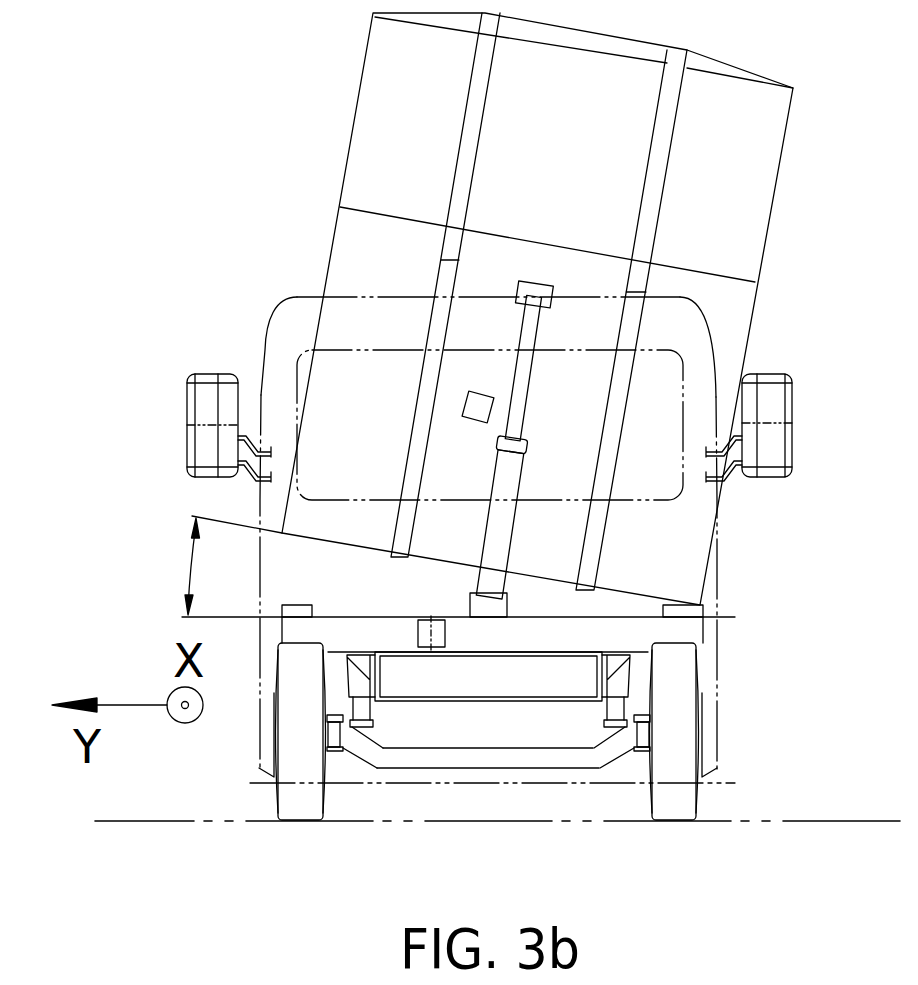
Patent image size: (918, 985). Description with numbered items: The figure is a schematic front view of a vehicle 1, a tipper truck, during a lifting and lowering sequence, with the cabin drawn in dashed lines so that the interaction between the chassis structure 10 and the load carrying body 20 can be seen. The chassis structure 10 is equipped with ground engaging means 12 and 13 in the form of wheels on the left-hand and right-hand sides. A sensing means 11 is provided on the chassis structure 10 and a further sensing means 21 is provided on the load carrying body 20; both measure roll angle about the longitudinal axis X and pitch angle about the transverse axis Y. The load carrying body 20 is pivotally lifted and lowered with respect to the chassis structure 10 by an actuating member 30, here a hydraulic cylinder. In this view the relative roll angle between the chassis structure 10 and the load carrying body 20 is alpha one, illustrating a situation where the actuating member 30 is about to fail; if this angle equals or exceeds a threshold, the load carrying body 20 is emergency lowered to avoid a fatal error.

The vehicle 1 is at (140, 187).
The chassis structure 10 is at (503, 633).
The sensing means 11 is at (430, 647).
The ground engaging means 12 is at (273, 797).
The ground engaging means 13 is at (702, 797).
The load carrying body 20 is at (408, 138).
The sensing means 21 is at (463, 395).
The actuating member 30 is at (470, 467).